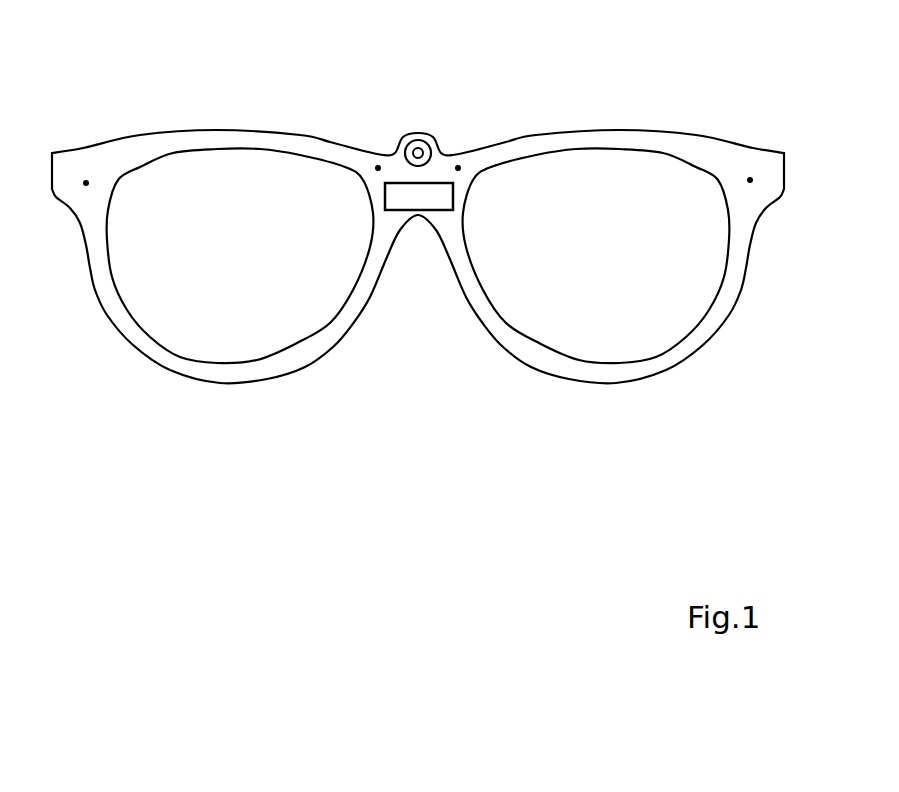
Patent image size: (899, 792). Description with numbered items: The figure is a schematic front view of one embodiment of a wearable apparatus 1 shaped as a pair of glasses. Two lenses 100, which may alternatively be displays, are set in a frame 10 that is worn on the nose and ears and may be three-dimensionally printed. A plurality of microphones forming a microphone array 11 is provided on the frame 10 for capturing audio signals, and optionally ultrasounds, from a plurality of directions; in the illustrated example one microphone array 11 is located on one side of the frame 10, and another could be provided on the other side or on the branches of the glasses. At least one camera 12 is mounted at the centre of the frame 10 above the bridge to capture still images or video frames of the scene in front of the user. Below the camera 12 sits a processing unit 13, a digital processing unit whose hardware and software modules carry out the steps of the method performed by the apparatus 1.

The wearable apparatus 1 is at (419, 292).
The frame 10 is at (707, 332).
The lens 100 is at (623, 317).
The microphone array 11 is at (86, 183).
The camera 12 is at (418, 148).
The processing unit 13 is at (418, 198).